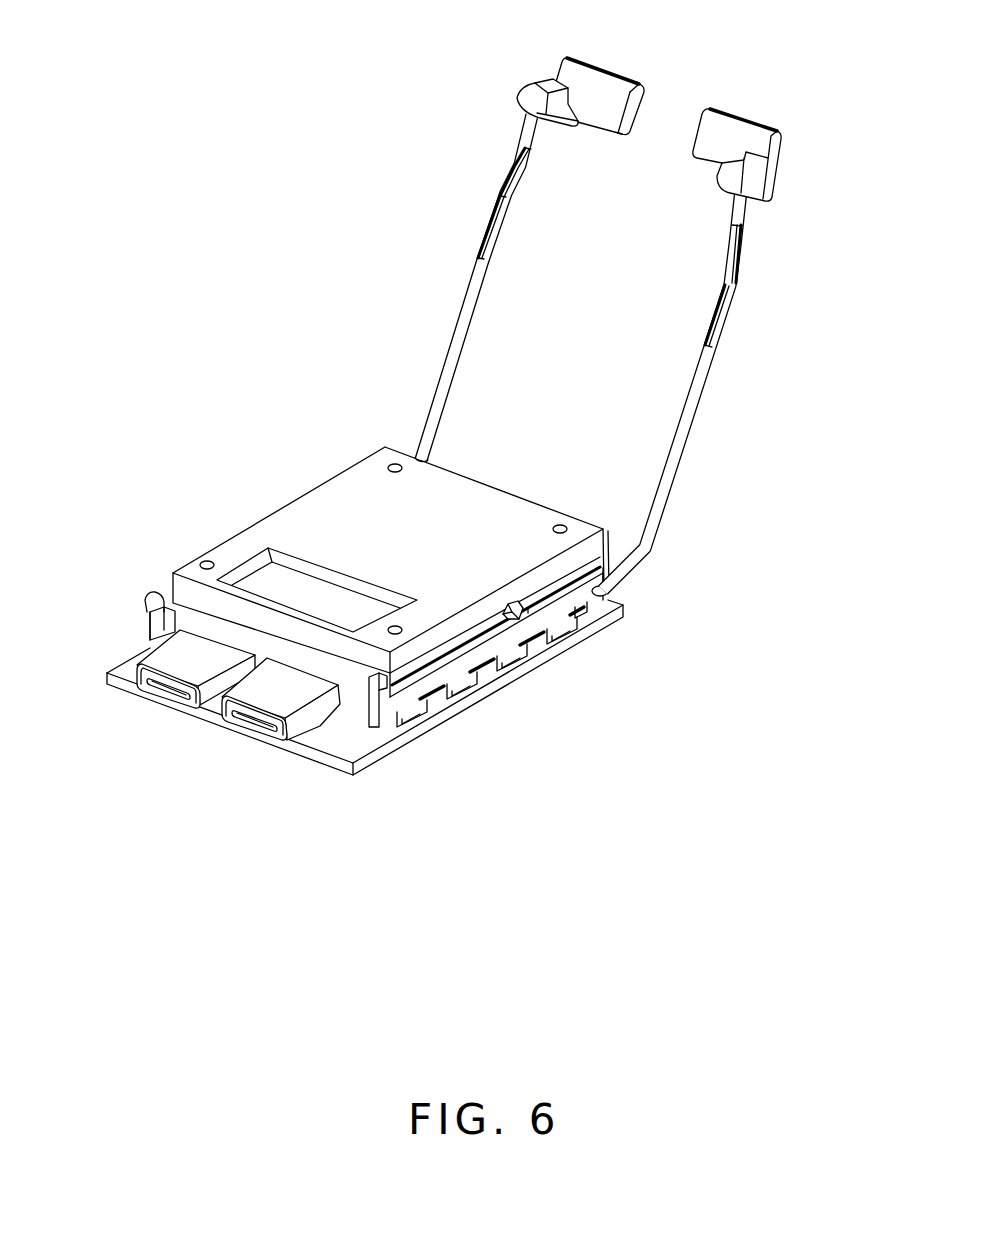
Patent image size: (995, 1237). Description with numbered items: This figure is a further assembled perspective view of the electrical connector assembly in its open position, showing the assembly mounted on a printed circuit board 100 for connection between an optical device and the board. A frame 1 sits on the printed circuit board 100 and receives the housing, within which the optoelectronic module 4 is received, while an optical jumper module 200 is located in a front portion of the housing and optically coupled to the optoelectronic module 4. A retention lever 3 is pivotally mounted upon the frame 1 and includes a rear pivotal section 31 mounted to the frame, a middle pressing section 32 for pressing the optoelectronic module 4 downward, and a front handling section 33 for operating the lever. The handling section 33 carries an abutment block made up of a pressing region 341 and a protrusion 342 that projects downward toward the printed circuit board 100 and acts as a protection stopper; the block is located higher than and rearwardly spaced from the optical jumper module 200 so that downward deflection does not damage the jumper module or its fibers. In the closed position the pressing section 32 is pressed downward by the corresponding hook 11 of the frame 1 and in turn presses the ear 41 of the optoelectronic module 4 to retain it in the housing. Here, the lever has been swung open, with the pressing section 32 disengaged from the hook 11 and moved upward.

The frame 1 is at (453, 672).
The hook 11 is at (157, 600).
The retention lever 3 is at (462, 327).
The rear pivotal section 31 is at (608, 591).
The middle pressing section 32 is at (690, 400).
The front handling section 33 is at (758, 177).
The pressing region 341 is at (595, 88).
The protrusion 342 is at (530, 104).
The optoelectronic module 4 is at (300, 513).
The ear 41 is at (513, 613).
The printed circuit board 100 is at (340, 742).
The optical jumper module 200 is at (160, 660).